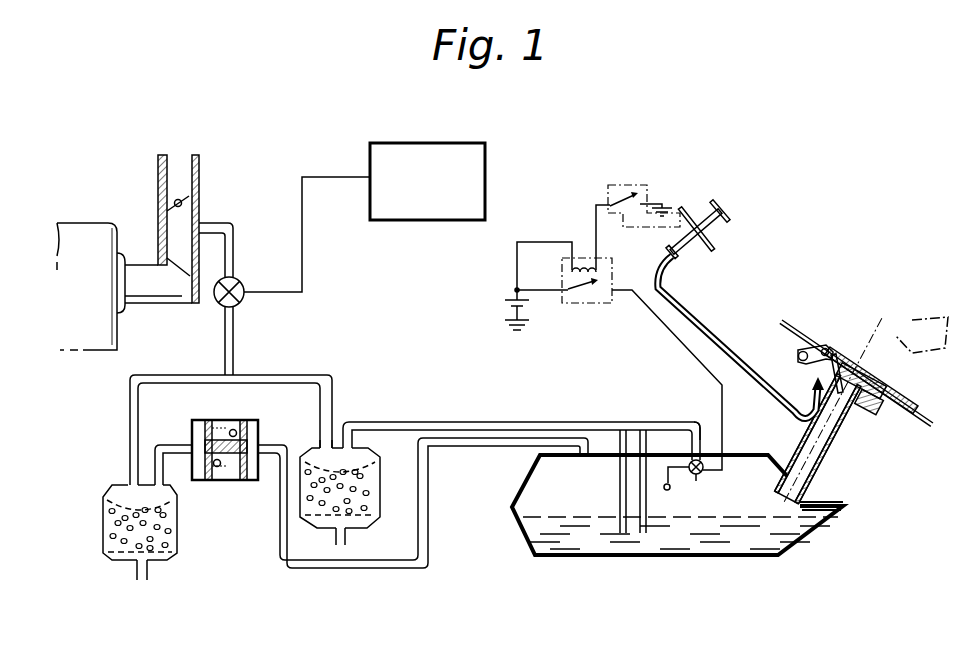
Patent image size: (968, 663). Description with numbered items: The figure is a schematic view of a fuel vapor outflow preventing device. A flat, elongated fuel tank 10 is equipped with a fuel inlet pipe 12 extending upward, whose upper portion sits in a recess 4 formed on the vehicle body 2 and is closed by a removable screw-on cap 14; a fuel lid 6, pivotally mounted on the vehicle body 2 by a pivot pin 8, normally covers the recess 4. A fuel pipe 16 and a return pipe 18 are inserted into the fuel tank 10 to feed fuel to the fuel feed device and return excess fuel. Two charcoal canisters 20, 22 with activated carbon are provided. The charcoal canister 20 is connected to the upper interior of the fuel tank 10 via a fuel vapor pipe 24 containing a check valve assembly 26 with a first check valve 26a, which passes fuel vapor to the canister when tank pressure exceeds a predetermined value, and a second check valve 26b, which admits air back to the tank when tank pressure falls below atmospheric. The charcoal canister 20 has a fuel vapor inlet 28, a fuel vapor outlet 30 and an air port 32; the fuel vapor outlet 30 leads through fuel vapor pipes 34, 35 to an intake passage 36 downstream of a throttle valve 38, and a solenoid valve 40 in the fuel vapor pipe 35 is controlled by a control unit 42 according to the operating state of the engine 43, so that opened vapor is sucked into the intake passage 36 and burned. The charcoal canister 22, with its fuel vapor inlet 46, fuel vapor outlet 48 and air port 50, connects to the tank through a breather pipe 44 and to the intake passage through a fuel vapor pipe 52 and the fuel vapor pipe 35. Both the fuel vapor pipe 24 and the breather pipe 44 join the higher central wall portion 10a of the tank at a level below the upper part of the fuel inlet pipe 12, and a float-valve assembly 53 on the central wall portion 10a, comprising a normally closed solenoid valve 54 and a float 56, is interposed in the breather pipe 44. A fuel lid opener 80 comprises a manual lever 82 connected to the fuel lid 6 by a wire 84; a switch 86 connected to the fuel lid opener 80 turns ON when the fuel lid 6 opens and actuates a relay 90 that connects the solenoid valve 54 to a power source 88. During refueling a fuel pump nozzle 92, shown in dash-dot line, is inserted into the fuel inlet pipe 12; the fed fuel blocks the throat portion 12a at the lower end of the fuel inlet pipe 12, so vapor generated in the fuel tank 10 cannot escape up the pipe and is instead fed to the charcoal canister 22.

The vehicle body 2 is at (800, 326).
The recess 4 is at (873, 420).
The fuel lid 6 is at (908, 393).
The pivot pin 8 is at (832, 350).
The fuel tank 10 is at (677, 516).
The central wall portion 10a is at (745, 455).
The fuel inlet pipe 12 is at (836, 460).
The throat portion 12a is at (806, 506).
The cap 14 is at (886, 416).
The fuel pipe 16 is at (621, 440).
The return pipe 18 is at (643, 435).
The charcoal canister 20 is at (100, 526).
The charcoal canister 22 is at (380, 478).
The fuel vapor pipe 24 is at (456, 447).
The check valve assembly 26 is at (228, 471).
The first check valve 26a is at (232, 427).
The second check valve 26b is at (216, 481).
The fuel vapor inlet 28 is at (160, 468).
The fuel vapor outlet 30 is at (128, 472).
The air port 32 is at (148, 582).
The fuel vapor pipe 34 is at (172, 375).
The fuel vapor pipe 35 is at (236, 320).
The intake passage 36 is at (192, 184).
The throttle valve 38 is at (165, 207).
The solenoid valve 40 is at (240, 282).
The control unit 42 is at (485, 157).
The engine 43 is at (76, 228).
The breather pipe 44 is at (494, 422).
The fuel vapor inlet 46 is at (345, 428).
The fuel vapor outlet 48 is at (318, 440).
The air port 50 is at (347, 538).
The fuel vapor pipe 52 is at (283, 375).
The float-valve assembly 53 is at (700, 438).
The solenoid valve 54 is at (703, 471).
The float 56 is at (671, 490).
The fuel lid opener 80 is at (726, 228).
The manual lever 82 is at (728, 213).
The wire 84 is at (802, 362).
The switch 86 is at (628, 185).
The power source 88 is at (504, 302).
The relay 90 is at (590, 303).
The fuel pump nozzle 92 is at (912, 320).